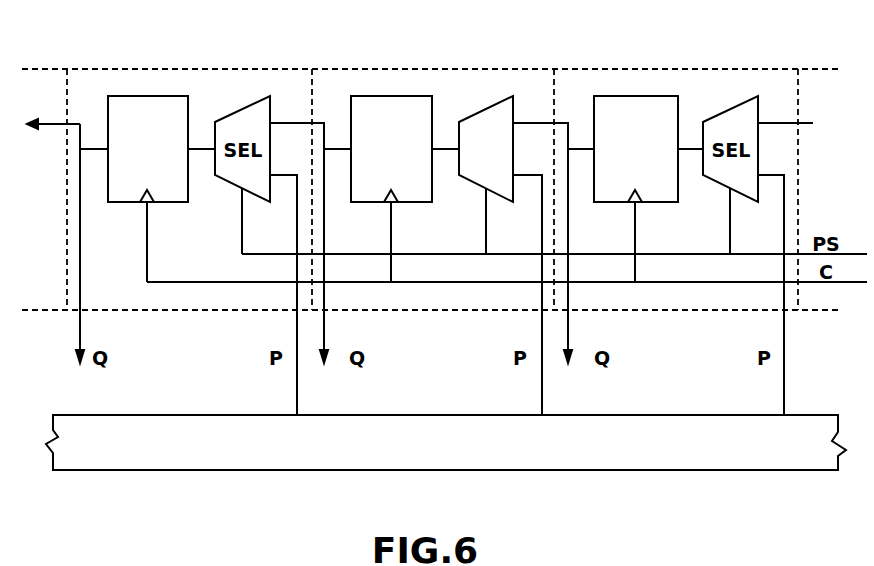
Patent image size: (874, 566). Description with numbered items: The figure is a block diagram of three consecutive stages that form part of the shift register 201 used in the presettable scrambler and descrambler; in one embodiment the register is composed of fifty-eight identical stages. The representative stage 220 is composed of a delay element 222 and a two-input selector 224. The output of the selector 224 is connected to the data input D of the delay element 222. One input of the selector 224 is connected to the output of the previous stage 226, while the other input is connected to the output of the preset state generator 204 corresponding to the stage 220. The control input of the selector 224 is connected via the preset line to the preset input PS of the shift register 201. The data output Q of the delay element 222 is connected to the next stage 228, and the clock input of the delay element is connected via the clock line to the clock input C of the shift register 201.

The shift register 201 is at (770, 70).
The stage 220 is at (332, 80).
The delay element 222 is at (400, 95).
The two-input selector 224 is at (487, 105).
The previous stage 226 is at (680, 83).
The next stage 228 is at (168, 83).
The preset state generator 204 is at (417, 413).